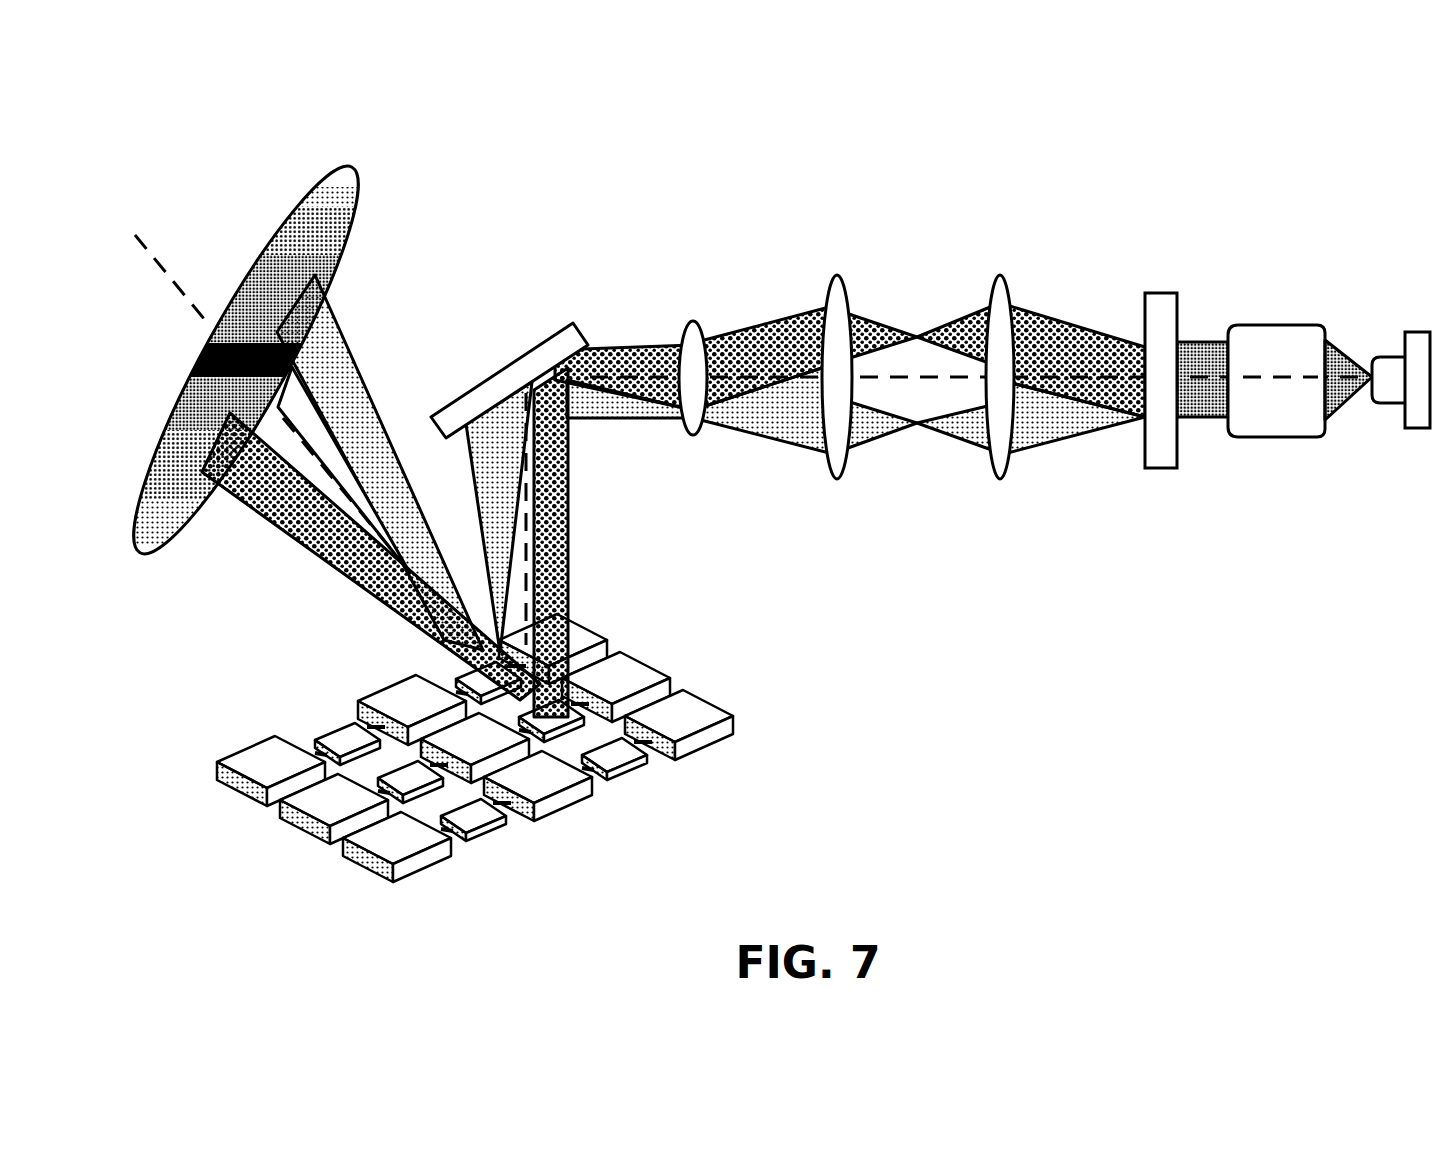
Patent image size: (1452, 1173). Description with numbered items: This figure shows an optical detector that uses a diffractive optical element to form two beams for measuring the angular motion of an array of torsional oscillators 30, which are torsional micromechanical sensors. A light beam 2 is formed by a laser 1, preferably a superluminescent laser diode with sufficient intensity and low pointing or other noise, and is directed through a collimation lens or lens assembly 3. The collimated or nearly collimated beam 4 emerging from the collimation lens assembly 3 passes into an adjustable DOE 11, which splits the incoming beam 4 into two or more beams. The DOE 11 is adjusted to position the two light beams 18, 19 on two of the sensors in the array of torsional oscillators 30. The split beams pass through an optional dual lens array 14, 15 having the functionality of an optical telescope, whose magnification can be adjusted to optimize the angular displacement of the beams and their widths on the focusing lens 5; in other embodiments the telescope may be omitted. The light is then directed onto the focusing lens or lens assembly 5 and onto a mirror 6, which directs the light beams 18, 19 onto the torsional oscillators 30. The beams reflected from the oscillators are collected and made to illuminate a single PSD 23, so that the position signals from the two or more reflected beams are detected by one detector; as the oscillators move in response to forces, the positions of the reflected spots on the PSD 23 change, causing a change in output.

The laser 1 is at (1419, 433).
The light beam 2 is at (1353, 414).
The collimation lens or lens assembly 3 is at (1289, 318).
The collimated beam 4 is at (1206, 336).
The focusing lens or lens assembly 5 is at (692, 317).
The mirror 6 is at (512, 348).
The adjustable DOE 11 is at (1160, 288).
The dual lens array 14 is at (999, 270).
The dual lens array 15 is at (834, 268).
The light beam 18 is at (1080, 316).
The light beam 19 is at (1037, 458).
The PSD 23 is at (349, 160).
The array of torsional oscillators 30 is at (755, 718).